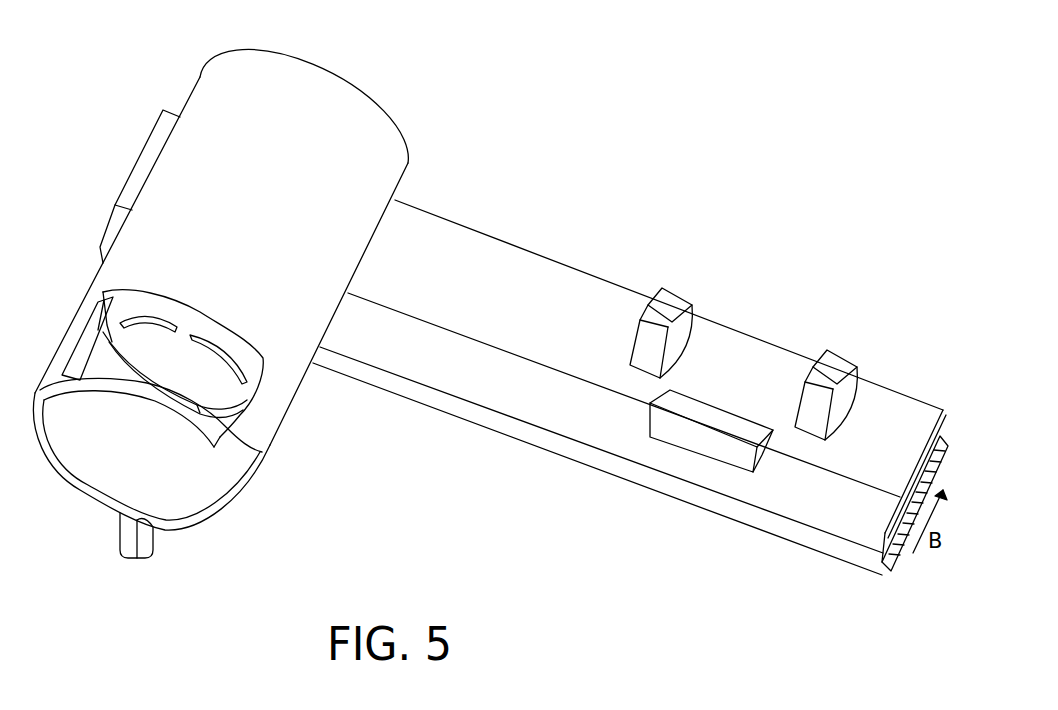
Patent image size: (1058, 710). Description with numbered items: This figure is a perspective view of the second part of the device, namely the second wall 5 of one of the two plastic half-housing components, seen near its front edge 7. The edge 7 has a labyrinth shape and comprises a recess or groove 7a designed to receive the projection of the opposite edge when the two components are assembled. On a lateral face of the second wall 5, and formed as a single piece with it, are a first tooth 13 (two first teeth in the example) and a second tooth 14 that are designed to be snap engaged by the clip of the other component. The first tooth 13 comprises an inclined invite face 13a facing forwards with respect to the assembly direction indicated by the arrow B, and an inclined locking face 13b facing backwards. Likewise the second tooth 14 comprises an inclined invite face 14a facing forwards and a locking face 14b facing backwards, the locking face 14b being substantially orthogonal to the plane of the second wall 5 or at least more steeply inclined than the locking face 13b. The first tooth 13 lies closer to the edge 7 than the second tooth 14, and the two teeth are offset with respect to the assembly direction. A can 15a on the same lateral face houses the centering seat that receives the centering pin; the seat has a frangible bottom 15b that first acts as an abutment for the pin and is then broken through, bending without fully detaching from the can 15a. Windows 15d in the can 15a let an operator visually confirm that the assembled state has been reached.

The second wall 5 is at (885, 573).
The front edge 7 is at (943, 411).
The recess or groove 7a is at (913, 483).
The first tooth 13 is at (729, 391).
The inclined invite face 13a is at (668, 303).
The inclined locking face 13b is at (645, 348).
The second tooth 14 is at (686, 400).
The inclined invite face 14a is at (717, 420).
The locking face 14b is at (708, 447).
The can 15a is at (238, 132).
The frangible bottom 15b is at (200, 375).
The windows 15d is at (80, 352).